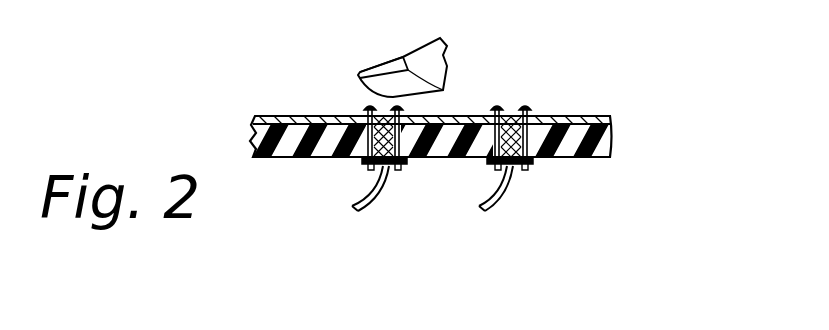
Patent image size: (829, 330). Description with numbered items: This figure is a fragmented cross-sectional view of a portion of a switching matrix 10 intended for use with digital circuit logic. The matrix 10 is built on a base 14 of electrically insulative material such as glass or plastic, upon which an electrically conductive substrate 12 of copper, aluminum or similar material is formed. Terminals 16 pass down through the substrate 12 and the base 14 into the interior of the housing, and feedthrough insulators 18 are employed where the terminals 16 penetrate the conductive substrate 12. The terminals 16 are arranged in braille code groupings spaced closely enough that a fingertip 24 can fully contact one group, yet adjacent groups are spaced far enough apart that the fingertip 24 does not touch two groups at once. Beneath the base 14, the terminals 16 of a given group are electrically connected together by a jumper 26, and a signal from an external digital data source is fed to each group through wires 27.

The switching matrix 10 is at (281, 99).
The electrically conductive substrate 12 is at (582, 117).
The base 14 is at (598, 142).
The terminals 16 is at (401, 108).
The feedthrough insulators 18 is at (366, 107).
The fingertip 24 is at (378, 67).
The jumper 26 is at (362, 161).
The wires 27 is at (369, 204).